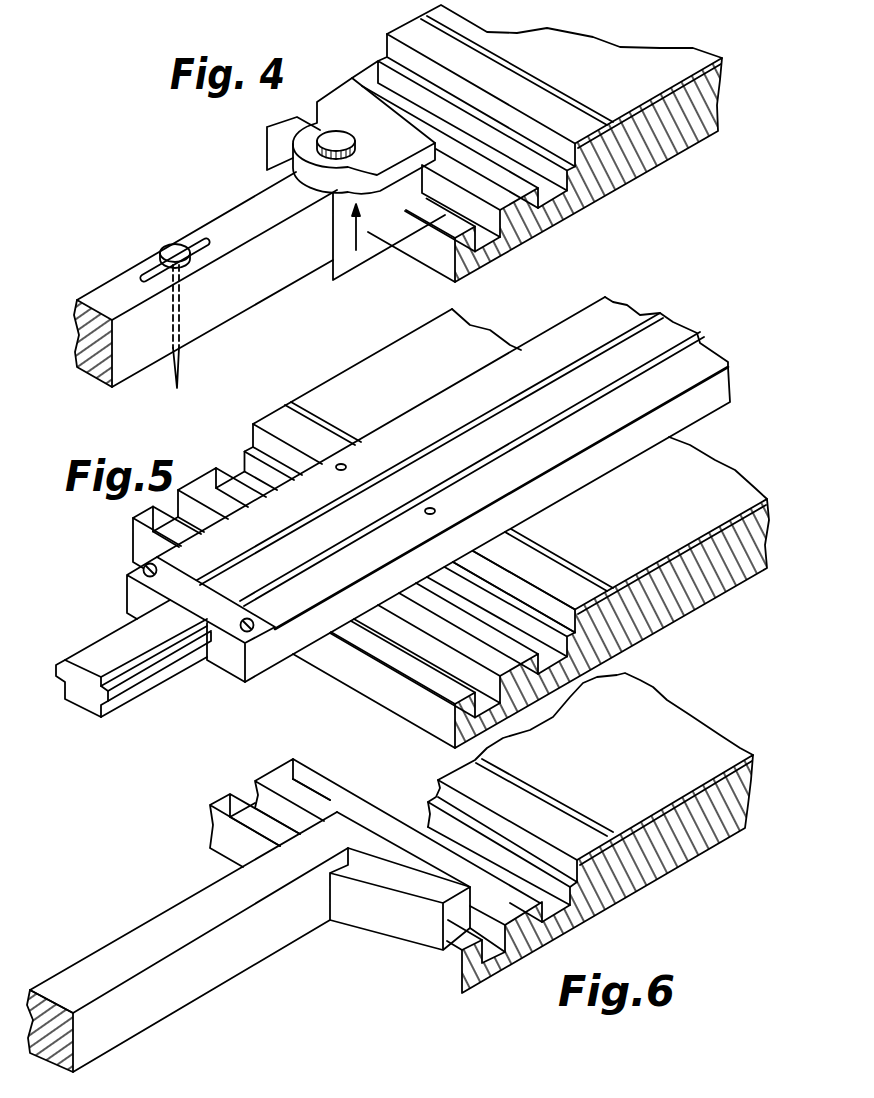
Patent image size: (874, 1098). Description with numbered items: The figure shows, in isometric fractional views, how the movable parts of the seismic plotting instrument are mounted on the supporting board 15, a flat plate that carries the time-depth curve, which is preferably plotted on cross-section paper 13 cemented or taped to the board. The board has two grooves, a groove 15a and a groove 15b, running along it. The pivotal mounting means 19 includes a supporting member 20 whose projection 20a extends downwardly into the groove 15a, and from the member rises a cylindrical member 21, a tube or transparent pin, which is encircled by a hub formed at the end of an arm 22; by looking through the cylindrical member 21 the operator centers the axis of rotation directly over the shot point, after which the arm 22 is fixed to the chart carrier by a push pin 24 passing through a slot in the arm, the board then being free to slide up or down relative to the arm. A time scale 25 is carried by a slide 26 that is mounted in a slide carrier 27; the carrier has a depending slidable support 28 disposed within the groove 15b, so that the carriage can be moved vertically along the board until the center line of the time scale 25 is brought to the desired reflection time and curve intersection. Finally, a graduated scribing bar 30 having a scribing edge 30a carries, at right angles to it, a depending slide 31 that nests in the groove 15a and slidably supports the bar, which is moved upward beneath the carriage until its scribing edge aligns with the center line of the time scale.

In FIG. 4, the cross-section paper 13 is at (441, 17).
In FIG. 4, the supporting board 15 is at (673, 150).
In FIG. 5, the supporting board 15 is at (725, 572).
In FIG. 6, the supporting board 15 is at (660, 867).
In FIG. 4, the groove 15a is at (485, 235).
In FIG. 5, the groove 15a is at (440, 670).
In FIG. 6, the groove 15a is at (487, 950).
In FIG. 4, the groove 15b is at (548, 193).
In FIG. 5, the groove 15b is at (555, 661).
In FIG. 6, the groove 15b is at (553, 913).
In FIG. 4, the pivotal mounting means 19 is at (362, 276).
In FIG. 4, the supporting member 20 is at (370, 113).
In FIG. 4, the projection 20a is at (413, 183).
In FIG. 4, the cylindrical member 21 is at (328, 146).
In FIG. 4, the arm 22 is at (110, 295).
In FIG. 4, the push pin 24 is at (172, 248).
In FIG. 5, the time scale 25 is at (112, 647).
In FIG. 5, the slide 26 is at (94, 705).
In FIG. 5, the slide carrier 27 is at (273, 657).
In FIG. 5, the depending slidable support 28 is at (485, 575).
In FIG. 6, the scribing bar 30 is at (160, 1013).
In FIG. 6, the scribing edge 30a is at (110, 958).
In FIG. 6, the depending slide 31 is at (453, 915).